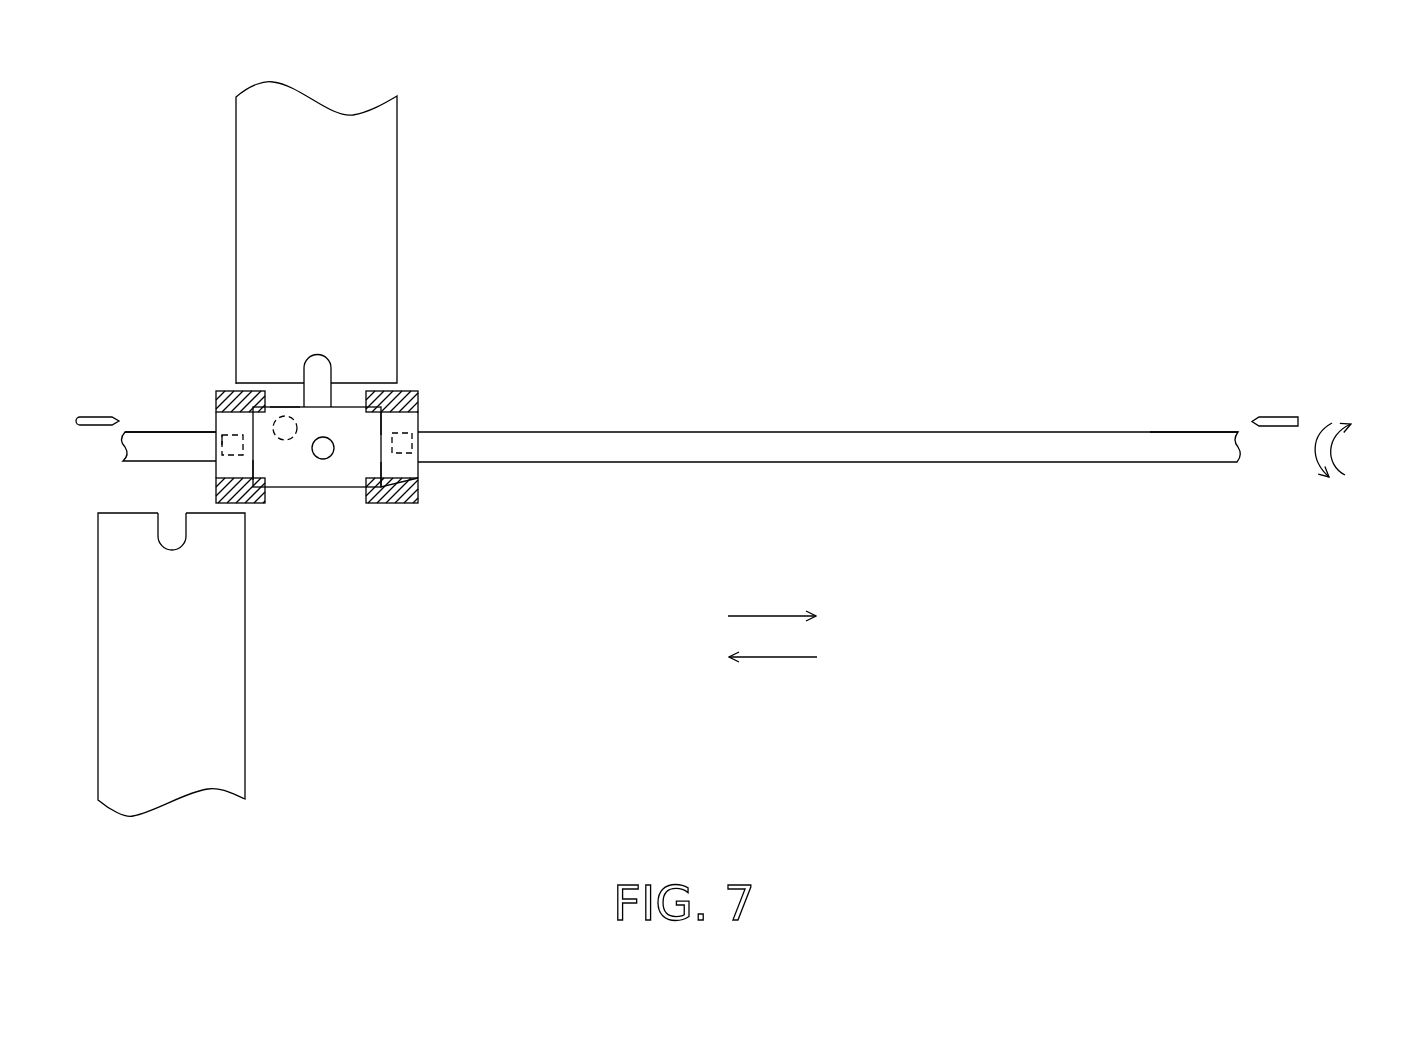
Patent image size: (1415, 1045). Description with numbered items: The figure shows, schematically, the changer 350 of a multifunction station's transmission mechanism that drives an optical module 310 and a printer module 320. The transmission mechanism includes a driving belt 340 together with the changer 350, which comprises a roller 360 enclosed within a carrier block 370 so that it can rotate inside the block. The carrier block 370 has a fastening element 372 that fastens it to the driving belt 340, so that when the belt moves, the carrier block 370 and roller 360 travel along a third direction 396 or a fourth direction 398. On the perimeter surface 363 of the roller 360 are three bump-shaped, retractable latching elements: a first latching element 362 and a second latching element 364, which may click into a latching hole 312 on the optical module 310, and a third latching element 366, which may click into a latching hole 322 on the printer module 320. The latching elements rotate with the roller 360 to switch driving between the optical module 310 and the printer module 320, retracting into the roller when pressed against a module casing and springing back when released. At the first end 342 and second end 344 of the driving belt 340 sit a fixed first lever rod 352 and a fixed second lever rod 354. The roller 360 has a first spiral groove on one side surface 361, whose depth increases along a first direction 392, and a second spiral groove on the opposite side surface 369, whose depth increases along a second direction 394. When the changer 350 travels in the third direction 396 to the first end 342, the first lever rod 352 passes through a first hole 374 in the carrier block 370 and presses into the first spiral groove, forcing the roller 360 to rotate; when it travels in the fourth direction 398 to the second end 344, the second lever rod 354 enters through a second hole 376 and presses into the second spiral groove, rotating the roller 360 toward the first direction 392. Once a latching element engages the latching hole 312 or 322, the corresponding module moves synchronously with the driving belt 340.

The optical module 310 is at (332, 120).
The latching hole 312 is at (393, 258).
The printer module 320 is at (174, 664).
The latching hole 322 is at (172, 550).
The driving belt 340 is at (665, 373).
The first end 342 is at (1222, 410).
The second end 344 is at (130, 410).
The changer 350 is at (324, 453).
The first lever rod 352 is at (1278, 417).
The second lever rod 354 is at (83, 415).
The roller 360 is at (317, 494).
The side surface 361 is at (383, 423).
The first latching element 362 is at (330, 365).
The perimeter surface 363 is at (288, 406).
The second latching element 364 is at (288, 440).
The third latching element 366 is at (330, 458).
The side surface 369 is at (252, 470).
The carrier block 370 is at (408, 390).
The fastening element 372 is at (225, 430).
The first hole 374 is at (416, 470).
The second hole 376 is at (228, 433).
The first direction 392 is at (1325, 460).
The second direction 394 is at (1350, 475).
The third direction 396 is at (780, 616).
The fourth direction 398 is at (780, 657).